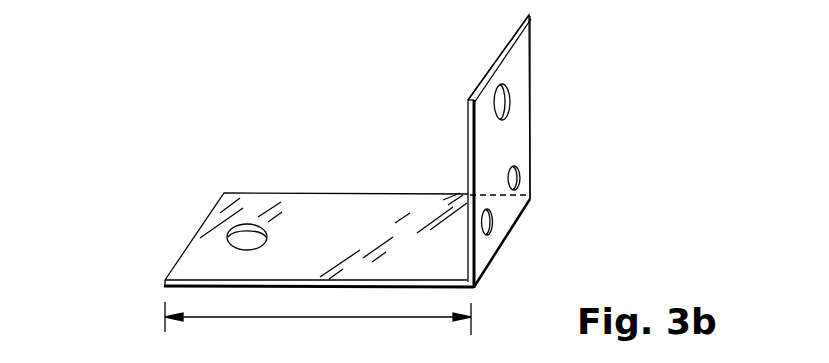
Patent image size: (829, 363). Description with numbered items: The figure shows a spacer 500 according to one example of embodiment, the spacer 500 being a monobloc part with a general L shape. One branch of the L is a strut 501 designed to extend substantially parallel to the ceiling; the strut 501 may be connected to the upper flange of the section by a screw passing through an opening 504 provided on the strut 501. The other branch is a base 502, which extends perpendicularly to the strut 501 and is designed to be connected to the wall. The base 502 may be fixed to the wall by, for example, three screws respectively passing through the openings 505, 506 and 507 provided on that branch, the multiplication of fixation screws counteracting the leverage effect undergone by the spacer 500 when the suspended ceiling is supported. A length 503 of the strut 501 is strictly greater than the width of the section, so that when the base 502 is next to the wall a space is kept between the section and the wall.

The spacer 500 is at (96, 318).
The strut 501 is at (196, 255).
The base 502 is at (523, 53).
The length of the strut 503 is at (318, 327).
The opening 504 is at (247, 244).
The opening 505 is at (504, 103).
The opening 506 is at (519, 172).
The opening 507 is at (491, 221).